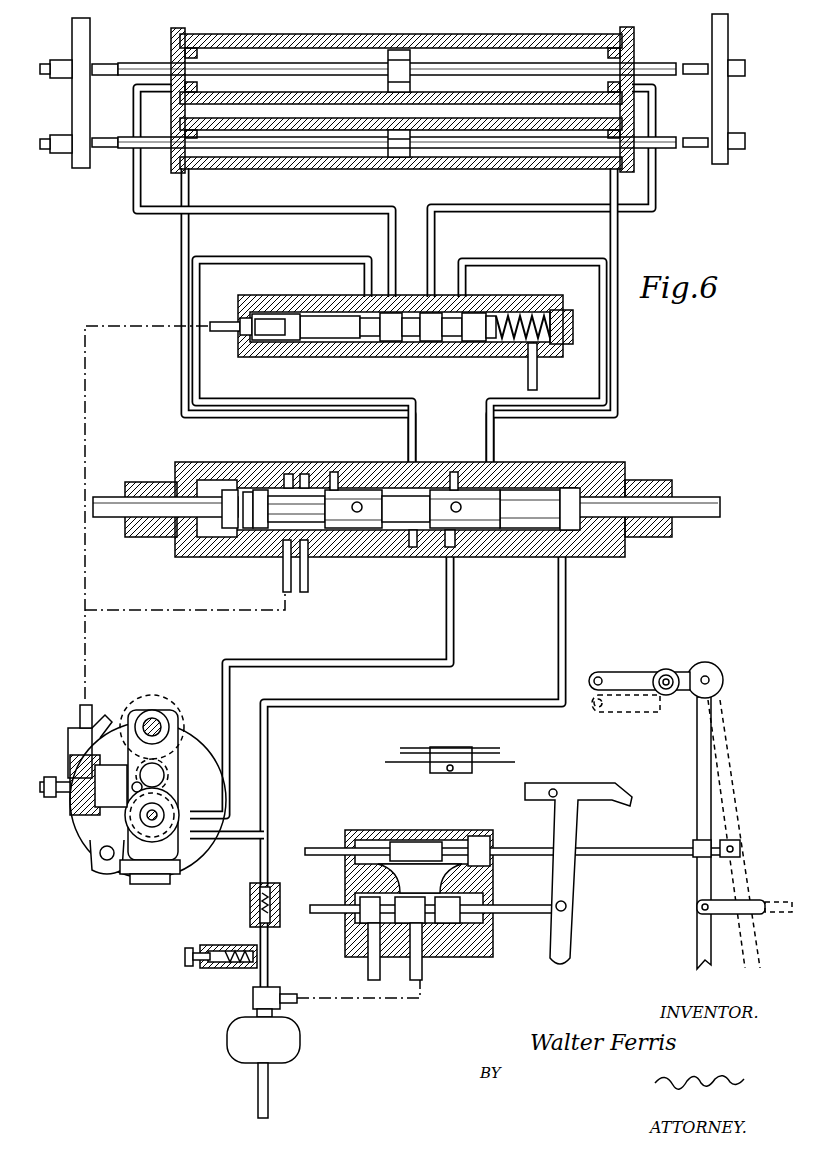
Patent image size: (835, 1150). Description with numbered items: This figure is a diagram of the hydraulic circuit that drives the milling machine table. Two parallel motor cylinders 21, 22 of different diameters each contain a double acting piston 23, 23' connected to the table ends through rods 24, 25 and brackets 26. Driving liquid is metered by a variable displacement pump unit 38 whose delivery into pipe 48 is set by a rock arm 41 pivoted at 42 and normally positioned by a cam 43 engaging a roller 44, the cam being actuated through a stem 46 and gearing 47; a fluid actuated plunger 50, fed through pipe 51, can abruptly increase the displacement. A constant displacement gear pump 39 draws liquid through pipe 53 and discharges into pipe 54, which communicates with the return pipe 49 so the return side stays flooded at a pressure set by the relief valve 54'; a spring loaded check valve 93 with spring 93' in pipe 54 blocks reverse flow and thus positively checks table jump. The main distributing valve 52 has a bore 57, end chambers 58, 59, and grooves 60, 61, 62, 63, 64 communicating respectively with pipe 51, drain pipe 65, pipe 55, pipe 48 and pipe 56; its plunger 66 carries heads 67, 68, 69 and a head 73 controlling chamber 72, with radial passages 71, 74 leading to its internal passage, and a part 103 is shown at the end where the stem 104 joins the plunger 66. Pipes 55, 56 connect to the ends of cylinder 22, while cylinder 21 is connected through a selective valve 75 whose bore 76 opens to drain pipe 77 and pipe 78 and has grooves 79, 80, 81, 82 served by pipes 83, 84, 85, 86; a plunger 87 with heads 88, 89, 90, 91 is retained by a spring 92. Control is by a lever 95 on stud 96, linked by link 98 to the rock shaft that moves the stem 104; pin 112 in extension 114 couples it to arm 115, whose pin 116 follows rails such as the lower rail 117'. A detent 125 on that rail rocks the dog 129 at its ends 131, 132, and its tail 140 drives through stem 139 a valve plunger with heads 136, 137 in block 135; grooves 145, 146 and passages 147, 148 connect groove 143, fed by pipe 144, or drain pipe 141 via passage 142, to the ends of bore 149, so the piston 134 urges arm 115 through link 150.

The motor cylinder 21 is at (238, 40).
The motor cylinder 22 is at (482, 168).
The piston 23 is at (382, 54).
The piston 23' is at (396, 164).
The rod 24 is at (295, 68).
The rod 25 is at (305, 148).
The bracket 26 is at (88, 42).
The variable displacement pump unit 38 is at (110, 880).
The gear pump unit 39 is at (240, 1048).
The rock arm 41 is at (178, 800).
The pivot 42 is at (172, 730).
The cam 43 is at (178, 875).
The roller 44 is at (92, 855).
The stem 46 is at (156, 722).
The gearing 47 is at (170, 745).
The pipe 48 is at (334, 667).
The return pipe 49 is at (345, 708).
The fluid actuated plunger 50 is at (100, 812).
The pipe 51 is at (283, 578).
The main distributing valve 52 is at (580, 466).
The pipe 53 is at (268, 1100).
The pipe 54 is at (248, 834).
The pressure relief valve 54' is at (221, 975).
The pipe 55 is at (184, 232).
The pipe 56 is at (618, 350).
The longitudinal bore 57 is at (512, 488).
The end chamber 58 is at (210, 538).
The end chamber 59 is at (612, 540).
The annular groove 60 is at (290, 474).
The annular groove 61 is at (306, 474).
The annular groove 62 is at (414, 545).
The annular groove 63 is at (454, 474).
The annular groove 64 is at (490, 540).
The drain pipe 65 is at (305, 580).
The plunger 66 is at (548, 488).
The end head 67 is at (260, 490).
The intermediate head 68 is at (460, 540).
The end head 69 is at (542, 540).
The radial passages 71 is at (430, 550).
The annular chamber 72 is at (357, 500).
The head 73 is at (336, 532).
The radial passages 74 is at (370, 488).
The selective valve 75 is at (540, 298).
The longitudinal bore 76 is at (310, 316).
The drain pipe 77 is at (537, 378).
The pipe 78 is at (222, 320).
The annular groove 79 is at (372, 342).
The annular groove 80 is at (393, 343).
The annular groove 81 is at (432, 343).
The annular groove 82 is at (455, 343).
The pipe 83 is at (247, 250).
The pipe 84 is at (318, 214).
The pipe 85 is at (532, 214).
The pipe 86 is at (558, 264).
The plunger 87 is at (290, 336).
The head 88 is at (268, 314).
The head 89 is at (350, 340).
The head 90 is at (412, 342).
The head 91 is at (488, 316).
The spring 92 is at (522, 316).
The check valve 93 is at (283, 898).
The spring 93' is at (244, 897).
The lever 95 is at (697, 890).
The stud 96 is at (710, 680).
The link 98 is at (768, 900).
The piston 103 is at (232, 508).
The stem 104 is at (112, 497).
The pin 112 is at (666, 690).
The extension 114 is at (670, 672).
The arm 115 is at (625, 672).
The pin 116 is at (598, 677).
The lower rail 117' is at (450, 773).
The detent 125 is at (460, 752).
The dog 129 is at (548, 824).
The wedge-shaped end 131 is at (556, 783).
The wedge-shaped end 132 is at (618, 786).
The fluid actuated piston 134 is at (428, 842).
The block 135 is at (380, 834).
The head 136 is at (352, 915).
The head 137 is at (494, 918).
The stem 139 is at (566, 900).
The tail 140 is at (570, 940).
The drain pipe 141 is at (370, 975).
The passage 142 is at (484, 945).
The annular groove 143 is at (414, 970).
The pipe 144 is at (268, 990).
The groove 145 is at (360, 920).
The groove 146 is at (460, 925).
The passage 147 is at (360, 880).
The passage 148 is at (494, 880).
The bore 149 is at (478, 836).
The link 150 is at (642, 846).